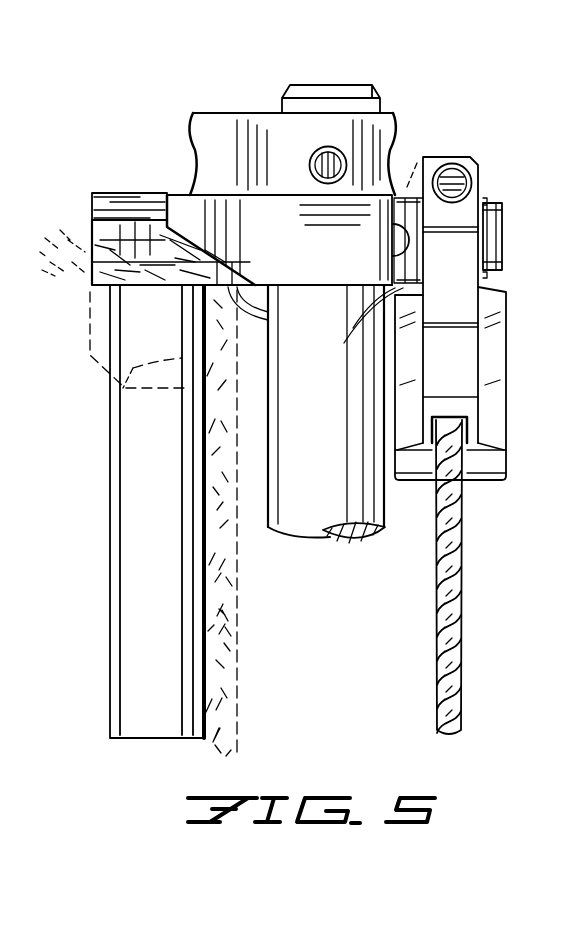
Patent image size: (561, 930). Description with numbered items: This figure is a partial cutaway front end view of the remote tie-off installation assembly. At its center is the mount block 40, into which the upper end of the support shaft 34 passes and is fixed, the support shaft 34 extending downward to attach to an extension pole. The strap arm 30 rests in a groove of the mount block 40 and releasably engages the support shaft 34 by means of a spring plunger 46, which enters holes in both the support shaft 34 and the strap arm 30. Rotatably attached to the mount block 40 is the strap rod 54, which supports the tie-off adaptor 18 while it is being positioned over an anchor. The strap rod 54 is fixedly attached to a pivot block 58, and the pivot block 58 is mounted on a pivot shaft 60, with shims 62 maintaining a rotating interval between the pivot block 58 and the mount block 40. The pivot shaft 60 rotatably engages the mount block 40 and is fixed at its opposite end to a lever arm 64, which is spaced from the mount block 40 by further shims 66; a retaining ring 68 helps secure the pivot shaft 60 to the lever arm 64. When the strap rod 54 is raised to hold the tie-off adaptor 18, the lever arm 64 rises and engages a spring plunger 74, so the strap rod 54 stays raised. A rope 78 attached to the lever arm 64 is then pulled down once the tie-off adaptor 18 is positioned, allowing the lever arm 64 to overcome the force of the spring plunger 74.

The tie-off adaptor 18 is at (232, 606).
The strap arm 30 is at (222, 132).
The support shaft 34 is at (322, 95).
The mount block 40 is at (242, 210).
The spring plunger 46 is at (338, 165).
The strap rod 54 is at (135, 365).
The pivot block 58 is at (120, 193).
The pivot shaft 60 is at (503, 240).
The shims 62 is at (272, 315).
The lever arm 64 is at (486, 168).
The shims 66 is at (346, 340).
The retaining ring 68 is at (486, 203).
The spring plunger 74 is at (412, 247).
The rope 78 is at (462, 663).